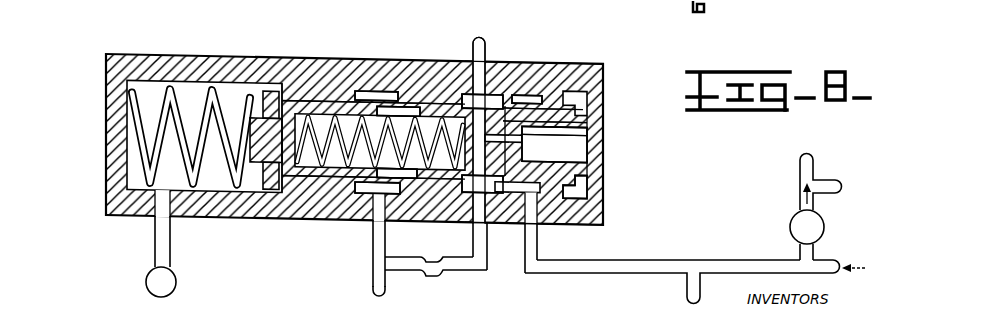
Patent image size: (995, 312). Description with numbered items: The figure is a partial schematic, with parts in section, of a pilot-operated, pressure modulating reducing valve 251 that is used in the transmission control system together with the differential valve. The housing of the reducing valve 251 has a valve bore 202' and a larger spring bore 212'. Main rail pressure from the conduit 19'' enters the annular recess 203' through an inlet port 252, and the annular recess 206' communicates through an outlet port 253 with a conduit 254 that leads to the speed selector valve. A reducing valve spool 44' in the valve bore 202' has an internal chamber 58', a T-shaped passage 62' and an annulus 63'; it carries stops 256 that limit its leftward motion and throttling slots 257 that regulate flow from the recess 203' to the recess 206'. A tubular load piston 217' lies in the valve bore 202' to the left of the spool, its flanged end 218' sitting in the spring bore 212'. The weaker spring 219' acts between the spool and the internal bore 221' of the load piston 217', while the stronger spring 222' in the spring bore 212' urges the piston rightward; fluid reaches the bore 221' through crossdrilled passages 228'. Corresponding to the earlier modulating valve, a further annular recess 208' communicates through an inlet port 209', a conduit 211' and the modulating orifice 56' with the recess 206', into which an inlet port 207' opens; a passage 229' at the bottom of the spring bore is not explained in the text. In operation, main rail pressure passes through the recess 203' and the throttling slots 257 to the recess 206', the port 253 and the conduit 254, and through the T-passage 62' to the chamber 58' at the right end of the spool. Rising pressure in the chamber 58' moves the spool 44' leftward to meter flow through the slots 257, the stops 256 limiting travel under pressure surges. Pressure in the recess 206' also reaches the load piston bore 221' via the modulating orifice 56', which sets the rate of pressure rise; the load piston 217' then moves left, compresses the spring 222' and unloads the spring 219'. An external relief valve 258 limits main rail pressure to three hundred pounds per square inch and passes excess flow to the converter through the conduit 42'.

The pilot-operated pressure modulating reducing valve 251 is at (100, 96).
The spring bore 212' is at (191, 104).
The stronger spring 222' is at (240, 71).
The load piston 217' is at (369, 102).
The weaker spring 219' is at (380, 98).
The crossdrilled passages 228' is at (403, 72).
The outlet port 253 is at (468, 63).
The conduit 254 is at (490, 60).
The throttling slots 257 is at (505, 108).
The annulus 63' is at (445, 92).
The valve bore 202' is at (565, 85).
The reducing valve spool 44' is at (578, 112).
The internal chamber 58' is at (585, 139).
The T-shaped passage 62' is at (554, 144).
The stops 256 is at (580, 188).
The annular recess 203' is at (564, 201).
The inlet port 252 is at (538, 228).
The main rail conduit 19'' is at (695, 268).
The converter conduit 42' is at (799, 182).
The external relief valve 258 is at (792, 221).
The stem 229' is at (139, 256).
The seal 218' is at (232, 209).
The internal bore 221' is at (278, 187).
The port 208' is at (364, 211).
The conduit 209' is at (346, 253).
The conduit end 211' is at (341, 294).
The annular recess 206' is at (460, 196).
The conduit 207' is at (452, 246).
The modulating orifice 56' is at (438, 279).